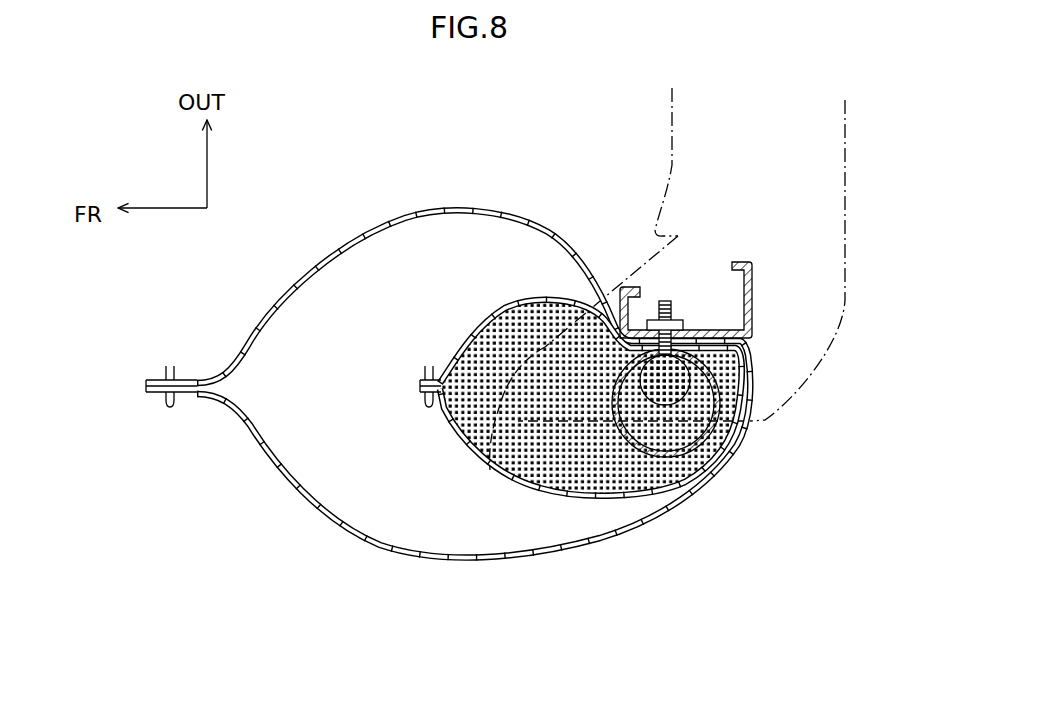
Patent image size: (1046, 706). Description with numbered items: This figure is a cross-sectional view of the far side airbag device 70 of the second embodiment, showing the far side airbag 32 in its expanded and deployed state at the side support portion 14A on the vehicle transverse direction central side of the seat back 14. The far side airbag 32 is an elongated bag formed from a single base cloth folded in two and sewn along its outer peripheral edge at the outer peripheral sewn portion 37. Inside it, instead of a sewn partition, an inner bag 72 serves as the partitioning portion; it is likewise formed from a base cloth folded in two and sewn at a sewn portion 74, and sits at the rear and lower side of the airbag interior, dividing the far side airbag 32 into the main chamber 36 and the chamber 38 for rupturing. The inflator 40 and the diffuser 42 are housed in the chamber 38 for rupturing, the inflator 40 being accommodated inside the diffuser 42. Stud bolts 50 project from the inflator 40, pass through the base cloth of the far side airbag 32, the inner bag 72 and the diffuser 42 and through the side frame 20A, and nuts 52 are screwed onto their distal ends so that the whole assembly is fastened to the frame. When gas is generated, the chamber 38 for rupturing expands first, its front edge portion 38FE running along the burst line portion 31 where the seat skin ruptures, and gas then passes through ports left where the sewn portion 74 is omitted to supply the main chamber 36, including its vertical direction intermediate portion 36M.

The far side airbag device for a vehicle 70 is at (448, 348).
The far side airbag 32 is at (387, 211).
The main chamber 36 is at (289, 508).
The vertical direction intermediate portion 36M is at (368, 549).
The outer peripheral sewn portion 37 is at (170, 407).
The chamber for rupturing 38 is at (575, 506).
The front edge portion 38FE is at (436, 403).
The sewn portion 74 is at (427, 370).
The inner bag 72 is at (523, 492).
The burst line portion 31 is at (489, 470).
The diffuser 42 is at (645, 479).
The inflator 40 is at (700, 440).
The stud bolts 50 is at (665, 300).
The nuts 52 is at (683, 325).
The side frame 20A is at (745, 262).
The seat back 14 is at (660, 130).
The side support portion 14A is at (626, 267).